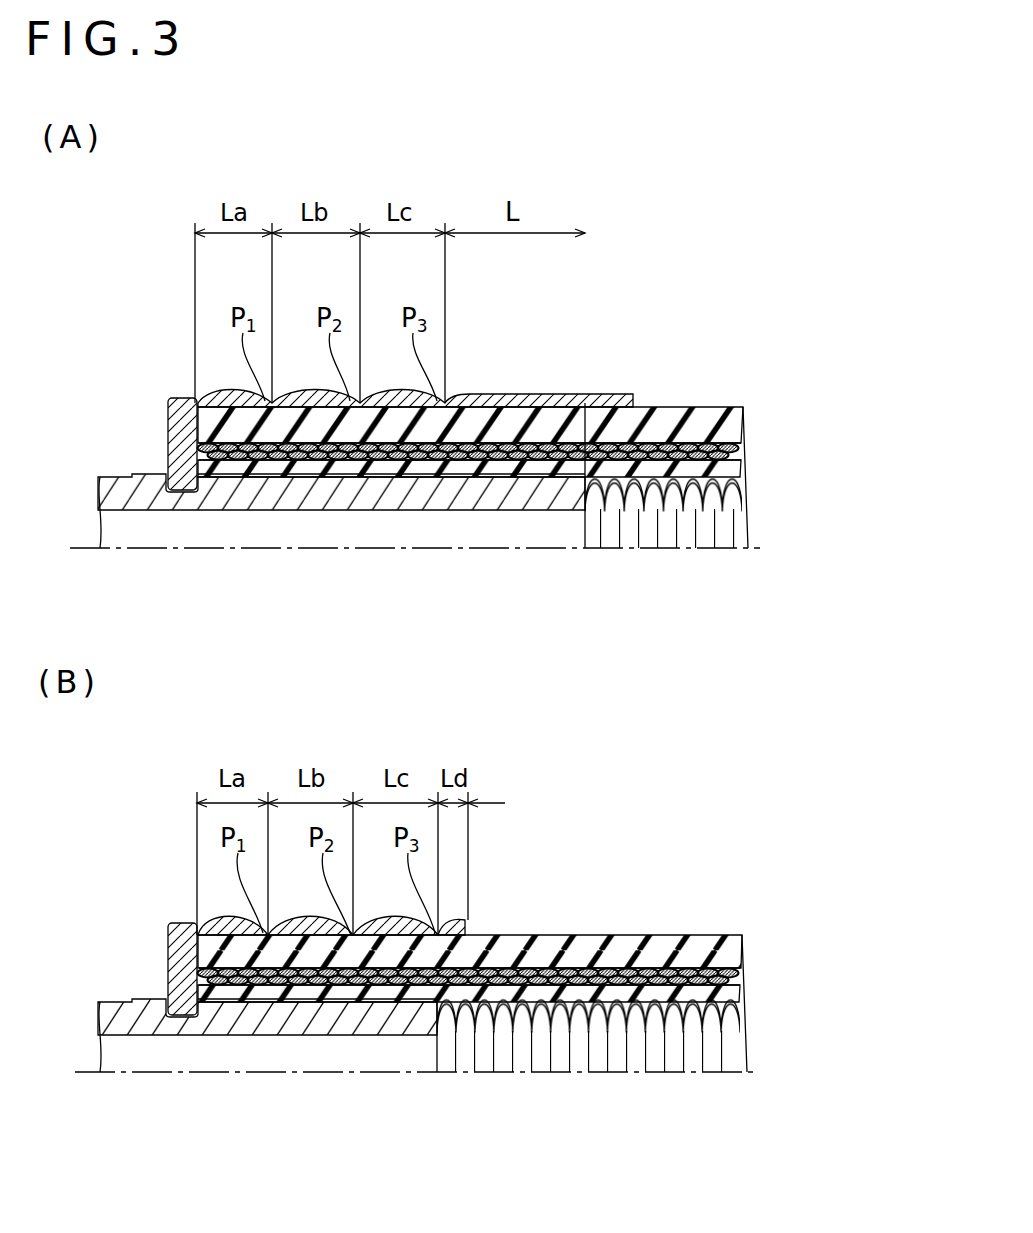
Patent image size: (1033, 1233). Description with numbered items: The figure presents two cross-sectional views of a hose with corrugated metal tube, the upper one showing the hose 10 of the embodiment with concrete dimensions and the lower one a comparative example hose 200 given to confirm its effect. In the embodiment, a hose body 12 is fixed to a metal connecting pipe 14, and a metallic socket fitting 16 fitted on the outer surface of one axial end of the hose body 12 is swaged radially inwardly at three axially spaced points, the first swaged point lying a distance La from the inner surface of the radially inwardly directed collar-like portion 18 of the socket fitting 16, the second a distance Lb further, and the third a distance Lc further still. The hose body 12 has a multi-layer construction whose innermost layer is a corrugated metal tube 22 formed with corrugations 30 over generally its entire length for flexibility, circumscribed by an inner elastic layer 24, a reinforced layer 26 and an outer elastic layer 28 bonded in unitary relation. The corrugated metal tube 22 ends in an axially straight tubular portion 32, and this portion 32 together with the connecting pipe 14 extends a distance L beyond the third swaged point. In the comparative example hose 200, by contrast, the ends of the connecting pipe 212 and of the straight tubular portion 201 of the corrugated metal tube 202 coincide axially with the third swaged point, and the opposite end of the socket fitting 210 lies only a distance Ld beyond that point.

The hose with corrugated metal tube 10 is at (600, 284).
The hose body 12 is at (683, 405).
The metal connecting pipe 14 is at (103, 477).
The socket fitting 16 is at (207, 396).
The collar-like portion 18 is at (176, 462).
The corrugated metal tube 22 is at (688, 507).
The inner elastic layer 24 is at (727, 470).
The reinforced layer 26 is at (648, 420).
The outer elastic layer 28 is at (643, 447).
The corrugations 30 is at (636, 490).
The straight tubular portion 32 is at (332, 478).
The comparative example hose 200 is at (560, 928).
The straight tubular portion 201 is at (304, 1003).
The corrugated metal tube 202 is at (520, 1030).
The socket fitting 210 is at (207, 918).
The connecting pipe 212 is at (103, 1000).